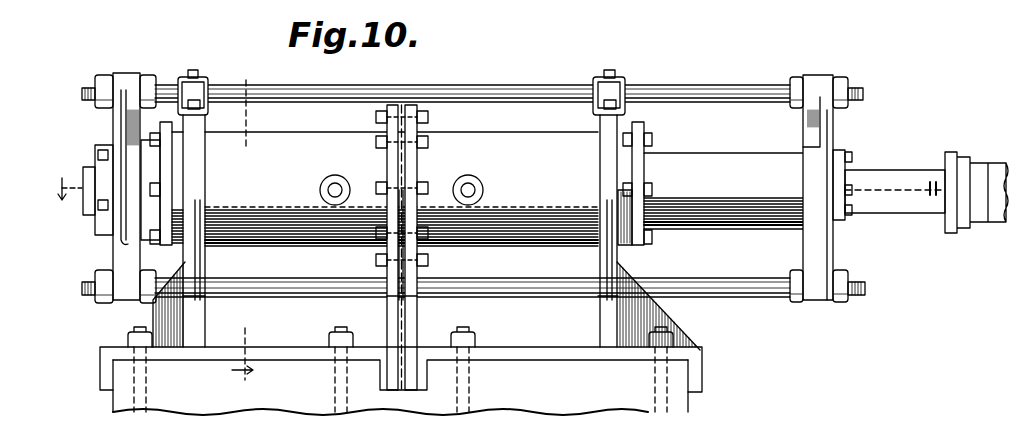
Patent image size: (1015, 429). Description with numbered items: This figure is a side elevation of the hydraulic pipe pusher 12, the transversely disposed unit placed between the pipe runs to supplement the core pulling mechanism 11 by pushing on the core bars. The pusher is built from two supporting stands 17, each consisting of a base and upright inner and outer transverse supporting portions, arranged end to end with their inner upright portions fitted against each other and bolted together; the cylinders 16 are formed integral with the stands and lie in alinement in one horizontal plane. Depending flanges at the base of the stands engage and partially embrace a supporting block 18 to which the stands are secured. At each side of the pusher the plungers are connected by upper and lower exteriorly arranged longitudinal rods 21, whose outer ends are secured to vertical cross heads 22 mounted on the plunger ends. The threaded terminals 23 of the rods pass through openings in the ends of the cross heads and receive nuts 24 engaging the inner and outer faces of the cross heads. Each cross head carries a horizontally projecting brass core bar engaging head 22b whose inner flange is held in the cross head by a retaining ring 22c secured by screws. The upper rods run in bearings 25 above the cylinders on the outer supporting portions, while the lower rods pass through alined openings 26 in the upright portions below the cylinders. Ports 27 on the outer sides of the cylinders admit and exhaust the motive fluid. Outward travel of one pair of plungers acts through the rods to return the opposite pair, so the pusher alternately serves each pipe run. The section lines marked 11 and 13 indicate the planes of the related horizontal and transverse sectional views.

The core pulling mechanism 11 is at (487, 189).
The hydraulic pipe pusher 12 is at (487, 177).
The supply track 13 is at (244, 234).
The cylinders 16 is at (487, 194).
The supporting stand 17 is at (275, 352).
The supporting block 18 is at (400, 387).
The longitudinal rods 21 is at (508, 82).
The cross heads 22 is at (115, 247).
The core bar engaging heads 22b is at (84, 207).
The retaining rings 22c is at (845, 170).
The terminals 23 is at (82, 93).
The nuts 24 is at (148, 76).
The bearings 25 is at (203, 77).
The alined openings 26 is at (185, 300).
The ports 27 is at (335, 182).